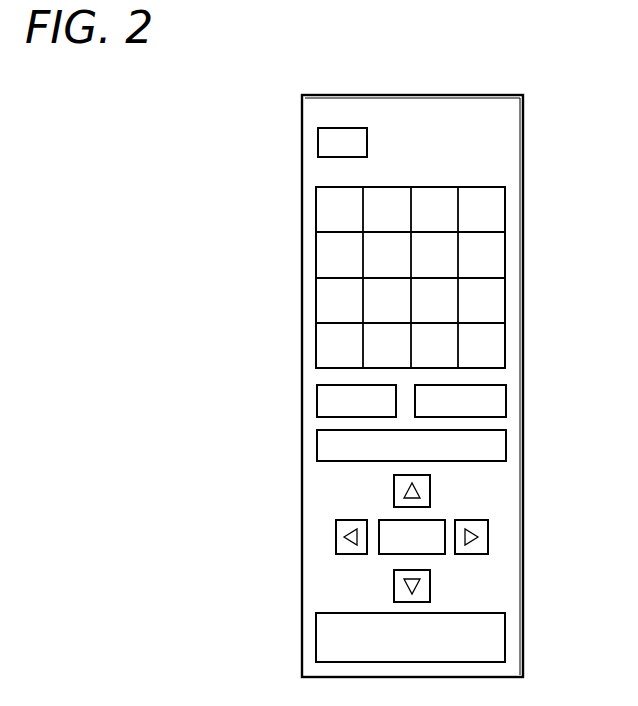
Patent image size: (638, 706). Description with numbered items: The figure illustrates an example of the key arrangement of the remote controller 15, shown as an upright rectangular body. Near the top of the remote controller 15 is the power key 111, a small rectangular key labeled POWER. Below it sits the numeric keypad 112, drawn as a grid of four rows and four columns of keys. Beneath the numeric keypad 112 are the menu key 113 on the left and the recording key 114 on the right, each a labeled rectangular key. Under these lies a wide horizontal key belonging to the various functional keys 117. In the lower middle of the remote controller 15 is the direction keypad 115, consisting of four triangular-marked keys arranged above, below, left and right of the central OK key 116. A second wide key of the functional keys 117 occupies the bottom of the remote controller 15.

The remote controller 15 is at (292, 65).
The power key 111 is at (318, 140).
The numeric keypad 112 is at (316, 250).
The menu key 113 is at (317, 396).
The recording key 114 is at (506, 398).
The direction keypad 115 is at (452, 510).
The OK key 116 is at (445, 554).
The functional keys 117 is at (506, 441).